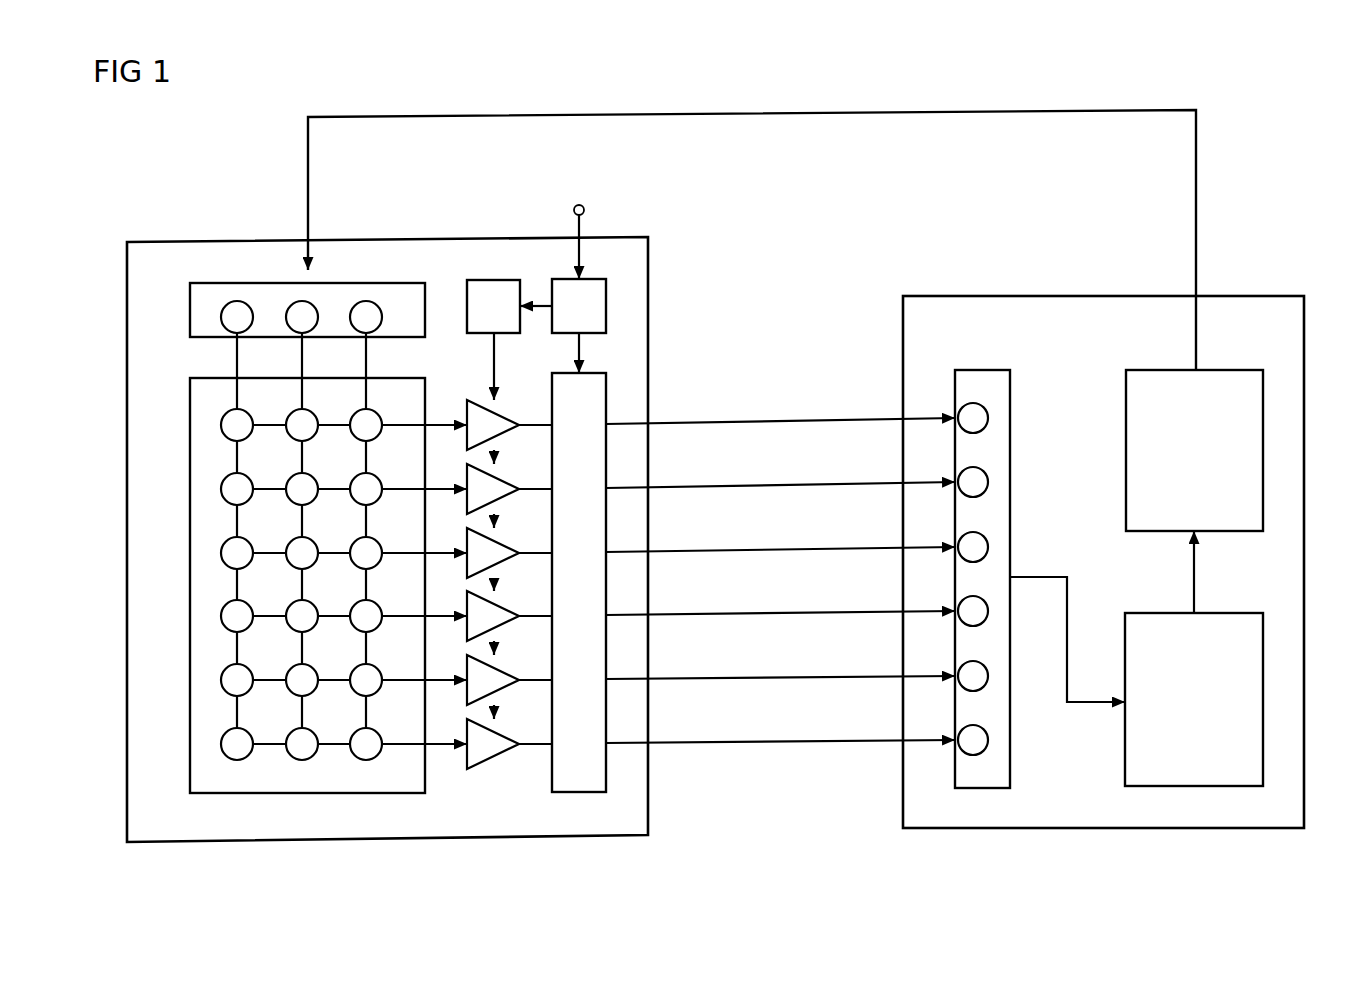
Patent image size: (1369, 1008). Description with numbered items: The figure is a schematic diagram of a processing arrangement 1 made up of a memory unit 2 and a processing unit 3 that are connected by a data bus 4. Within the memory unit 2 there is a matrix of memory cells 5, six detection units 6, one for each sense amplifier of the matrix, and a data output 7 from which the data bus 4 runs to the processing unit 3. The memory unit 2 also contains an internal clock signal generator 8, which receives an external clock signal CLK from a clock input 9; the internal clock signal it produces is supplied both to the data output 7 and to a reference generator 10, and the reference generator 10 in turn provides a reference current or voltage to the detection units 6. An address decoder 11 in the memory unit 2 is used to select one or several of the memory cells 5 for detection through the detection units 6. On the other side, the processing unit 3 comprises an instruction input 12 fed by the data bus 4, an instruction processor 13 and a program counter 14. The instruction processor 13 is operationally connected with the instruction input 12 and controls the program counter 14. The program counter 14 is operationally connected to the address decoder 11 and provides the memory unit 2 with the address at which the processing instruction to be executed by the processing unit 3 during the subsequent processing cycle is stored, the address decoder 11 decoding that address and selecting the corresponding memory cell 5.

The processing arrangement 1 is at (1212, 170).
The memory unit 2 is at (648, 808).
The processing unit 3 is at (1303, 665).
The data bus 4 is at (743, 413).
The matrix of memory cells 5 is at (310, 762).
The detection units 6 is at (490, 760).
The data output 7 is at (607, 480).
The internal clock signal generator 8 is at (605, 308).
The clock input 9 is at (583, 206).
The reference generator 10 is at (488, 280).
The address decoder 11 is at (243, 282).
The instruction input 12 is at (1010, 465).
The instruction processor 13 is at (1212, 613).
The program counter 14 is at (1212, 369).